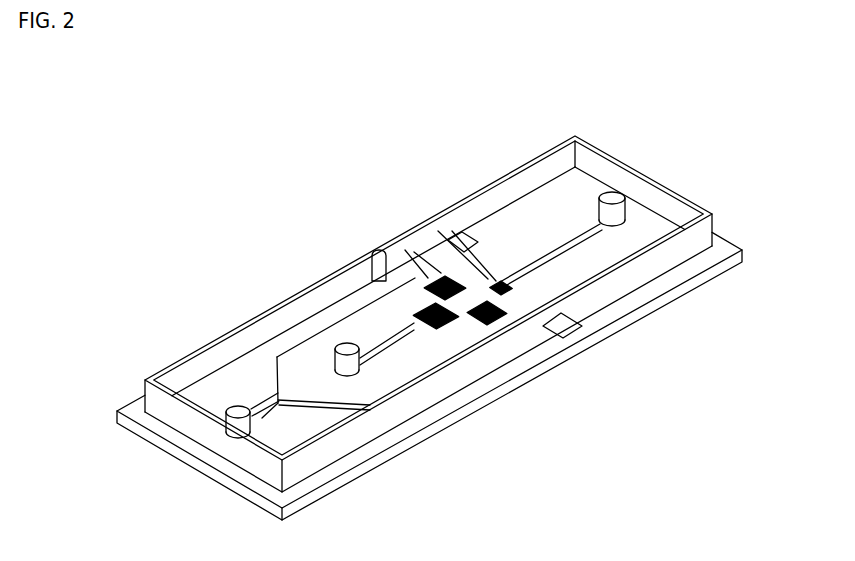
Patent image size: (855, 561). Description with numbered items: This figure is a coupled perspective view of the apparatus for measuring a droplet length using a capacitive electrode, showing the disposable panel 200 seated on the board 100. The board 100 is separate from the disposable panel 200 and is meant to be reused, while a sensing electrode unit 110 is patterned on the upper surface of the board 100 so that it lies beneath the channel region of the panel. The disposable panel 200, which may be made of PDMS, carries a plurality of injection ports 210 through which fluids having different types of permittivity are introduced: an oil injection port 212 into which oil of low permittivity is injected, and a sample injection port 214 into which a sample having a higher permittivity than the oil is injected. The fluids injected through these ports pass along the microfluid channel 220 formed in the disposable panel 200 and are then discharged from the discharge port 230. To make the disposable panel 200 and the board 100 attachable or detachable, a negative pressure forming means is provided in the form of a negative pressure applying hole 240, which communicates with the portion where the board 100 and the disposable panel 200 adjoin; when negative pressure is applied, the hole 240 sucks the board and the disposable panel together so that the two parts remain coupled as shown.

The board 100 is at (572, 347).
The sensing electrode unit 110 is at (503, 286).
The disposable panel 200 is at (594, 146).
The injection ports 210 is at (293, 244).
The oil injection port 212 is at (234, 408).
The sample injection port 214 is at (341, 344).
The microfluid channel 220 is at (470, 325).
The discharge port 230 is at (615, 197).
The negative pressure applying hole 240 is at (380, 250).